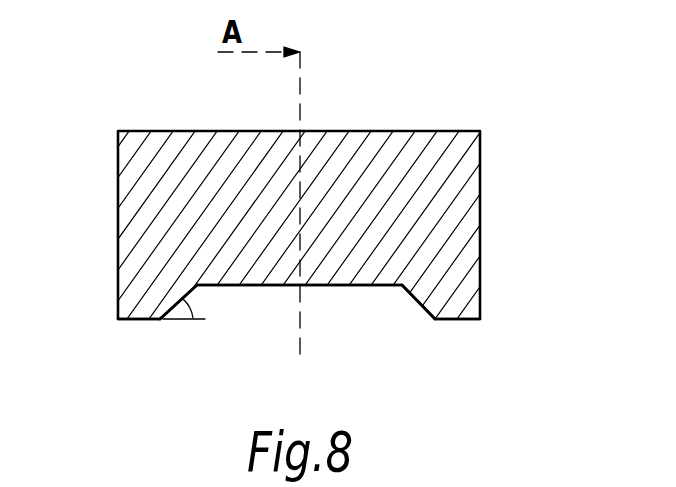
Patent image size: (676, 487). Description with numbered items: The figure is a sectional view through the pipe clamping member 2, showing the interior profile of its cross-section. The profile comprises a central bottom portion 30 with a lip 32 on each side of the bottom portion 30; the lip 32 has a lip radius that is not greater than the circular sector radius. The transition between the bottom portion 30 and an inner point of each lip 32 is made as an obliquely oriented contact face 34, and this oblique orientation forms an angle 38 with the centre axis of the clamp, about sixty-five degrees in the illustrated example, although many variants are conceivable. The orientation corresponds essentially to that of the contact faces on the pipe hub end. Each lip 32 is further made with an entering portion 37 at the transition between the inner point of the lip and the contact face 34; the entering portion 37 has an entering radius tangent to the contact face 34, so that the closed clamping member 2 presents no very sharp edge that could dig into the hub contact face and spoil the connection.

The clamping member 2 is at (413, 178).
The bottom portion 30 is at (377, 281).
The lip 32 is at (143, 302).
The obliquely oriented contact face 34 is at (173, 303).
The entering portion 37 is at (158, 321).
The angle 38 is at (197, 308).